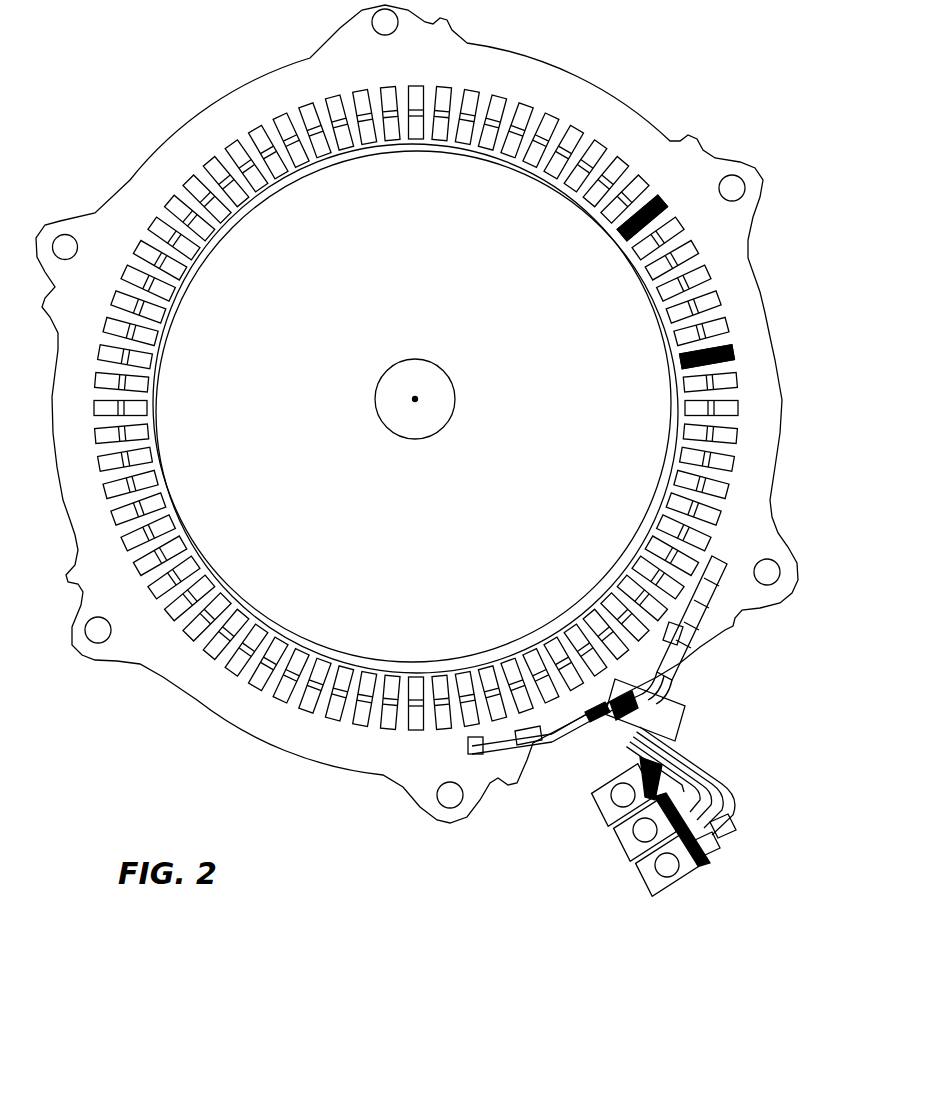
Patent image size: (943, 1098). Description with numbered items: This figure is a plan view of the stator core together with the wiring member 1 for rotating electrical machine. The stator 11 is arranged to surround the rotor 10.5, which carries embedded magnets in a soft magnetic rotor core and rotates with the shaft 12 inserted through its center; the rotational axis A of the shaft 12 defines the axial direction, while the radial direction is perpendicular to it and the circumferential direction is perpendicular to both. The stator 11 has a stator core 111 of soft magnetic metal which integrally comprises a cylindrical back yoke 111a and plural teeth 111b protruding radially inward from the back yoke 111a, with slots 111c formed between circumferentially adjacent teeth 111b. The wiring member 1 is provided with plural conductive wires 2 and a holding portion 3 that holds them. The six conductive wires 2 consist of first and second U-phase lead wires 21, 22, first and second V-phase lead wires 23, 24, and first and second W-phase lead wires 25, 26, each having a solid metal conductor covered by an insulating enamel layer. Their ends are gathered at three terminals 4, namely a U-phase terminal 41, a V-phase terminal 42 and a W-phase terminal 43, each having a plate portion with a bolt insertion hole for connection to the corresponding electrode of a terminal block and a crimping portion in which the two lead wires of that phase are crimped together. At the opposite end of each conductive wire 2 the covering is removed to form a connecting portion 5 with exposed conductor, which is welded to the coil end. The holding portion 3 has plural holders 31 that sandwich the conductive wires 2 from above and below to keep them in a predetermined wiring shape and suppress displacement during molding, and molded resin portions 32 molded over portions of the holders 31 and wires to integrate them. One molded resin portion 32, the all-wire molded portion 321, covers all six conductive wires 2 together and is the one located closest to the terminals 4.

The wiring member for rotating electrical machine 1 is at (693, 819).
The conductive wire 2 is at (721, 790).
The holding portion 3 is at (623, 698).
The terminal 4 is at (641, 859).
The connecting portion 5 is at (470, 742).
The stator 11 is at (194, 76).
The shaft 12 is at (457, 411).
The rotational axis A is at (413, 398).
The rotor 10.5 is at (581, 219).
The stator core 111 is at (128, 202).
The back yoke 111a is at (165, 163).
The teeth 111b is at (255, 188).
The slots 111c is at (227, 144).
The first U-phase lead wire 21 is at (710, 850).
The second U-phase lead wire 22 is at (720, 836).
The first V-phase lead wire 23 is at (722, 797).
The second V-phase lead wire 24 is at (693, 775).
The first W-phase lead wire 25 is at (678, 752).
The second W-phase lead wire 26 is at (683, 730).
The holder 31 is at (700, 643).
The molded resin portion 32 is at (528, 757).
The all-wire molded portion 321 is at (683, 713).
The U-phase terminal 41 is at (643, 883).
The V-phase terminal 42 is at (625, 843).
The W-phase terminal 43 is at (602, 810).